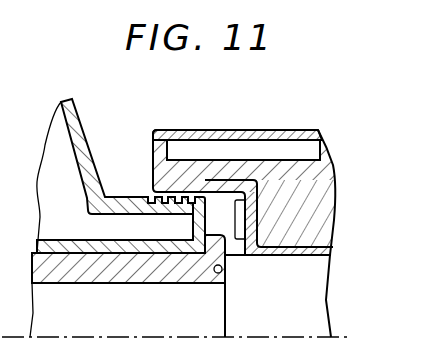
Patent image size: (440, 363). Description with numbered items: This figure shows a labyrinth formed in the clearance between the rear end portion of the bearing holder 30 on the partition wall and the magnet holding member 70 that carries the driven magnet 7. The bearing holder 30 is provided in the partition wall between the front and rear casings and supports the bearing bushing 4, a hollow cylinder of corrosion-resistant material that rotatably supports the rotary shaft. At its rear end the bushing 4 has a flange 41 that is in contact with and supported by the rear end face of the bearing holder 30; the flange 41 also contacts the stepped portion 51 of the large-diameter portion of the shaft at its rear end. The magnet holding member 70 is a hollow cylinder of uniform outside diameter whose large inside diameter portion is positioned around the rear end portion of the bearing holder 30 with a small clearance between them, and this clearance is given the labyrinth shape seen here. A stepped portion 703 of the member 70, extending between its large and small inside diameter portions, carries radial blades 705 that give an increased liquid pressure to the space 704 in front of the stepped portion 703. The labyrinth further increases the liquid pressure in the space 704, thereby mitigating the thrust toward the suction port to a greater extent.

The bearing bushing 4 is at (119, 272).
The flange 41 is at (192, 283).
The stepped portion 51 is at (223, 268).
The driven magnet 7 is at (248, 145).
The magnet holding member 70 is at (204, 132).
The stepped portion 703 is at (267, 192).
The space 704 is at (217, 213).
The radial blades 705 is at (258, 228).
The bearing holder 30 is at (135, 196).